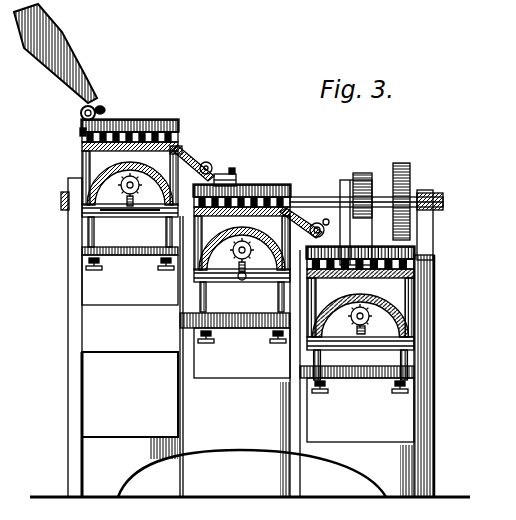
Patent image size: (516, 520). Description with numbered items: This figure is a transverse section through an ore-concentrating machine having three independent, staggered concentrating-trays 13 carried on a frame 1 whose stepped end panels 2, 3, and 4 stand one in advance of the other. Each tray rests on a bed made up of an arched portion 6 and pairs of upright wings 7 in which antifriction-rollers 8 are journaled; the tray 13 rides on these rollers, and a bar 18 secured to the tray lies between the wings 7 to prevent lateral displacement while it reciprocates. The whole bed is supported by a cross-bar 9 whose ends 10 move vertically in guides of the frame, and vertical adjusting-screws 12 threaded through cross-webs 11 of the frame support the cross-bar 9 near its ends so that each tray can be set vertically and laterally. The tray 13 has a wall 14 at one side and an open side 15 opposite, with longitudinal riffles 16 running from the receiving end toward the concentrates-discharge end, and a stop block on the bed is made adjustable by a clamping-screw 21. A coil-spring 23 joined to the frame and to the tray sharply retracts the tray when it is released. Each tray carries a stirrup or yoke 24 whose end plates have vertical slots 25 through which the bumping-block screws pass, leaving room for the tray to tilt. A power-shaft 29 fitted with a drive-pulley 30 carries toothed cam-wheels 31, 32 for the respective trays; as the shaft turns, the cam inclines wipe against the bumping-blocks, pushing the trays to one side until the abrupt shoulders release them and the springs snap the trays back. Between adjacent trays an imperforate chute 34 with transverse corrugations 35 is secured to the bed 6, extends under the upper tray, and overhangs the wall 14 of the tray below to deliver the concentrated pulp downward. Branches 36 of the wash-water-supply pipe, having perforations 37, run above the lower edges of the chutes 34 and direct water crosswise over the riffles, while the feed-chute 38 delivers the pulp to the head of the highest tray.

The frame 1 is at (440, 398).
The panel 2 is at (123, 337).
The panel 3 is at (240, 356).
The panel 4 is at (340, 454).
The arched portion of bed 6 is at (84, 178).
The upright wings 7 is at (82, 160).
The antifriction-rollers 8 is at (82, 122).
The cross-bar 9 is at (178, 216).
The ends of cross-bar 10 is at (290, 356).
The cross-webs 11 is at (146, 262).
The adjusting-screws 12 is at (82, 232).
The concentrating-tray 13 is at (152, 123).
The wall 14 is at (82, 132).
The open side 15 is at (180, 138).
The riffles 16 is at (133, 125).
The bar 18 is at (458, 272).
The clamping-screw 21 is at (374, 322).
The coil-spring 23 is at (130, 227).
The stirrups or yokes 24 is at (66, 204).
The vertical slots 25 is at (362, 174).
The power-shaft 29 is at (444, 202).
The drive-pulley 30 is at (410, 176).
The toothed cam-wheel 31 is at (386, 222).
The toothed cam-wheel 32 is at (240, 176).
The chutes or inclines 34 is at (208, 160).
The transverse corrugations 35 is at (186, 165).
The wash-water-supply pipe portions 36 is at (95, 110).
The perforations 37 is at (113, 117).
The feed-chute 38 is at (80, 56).